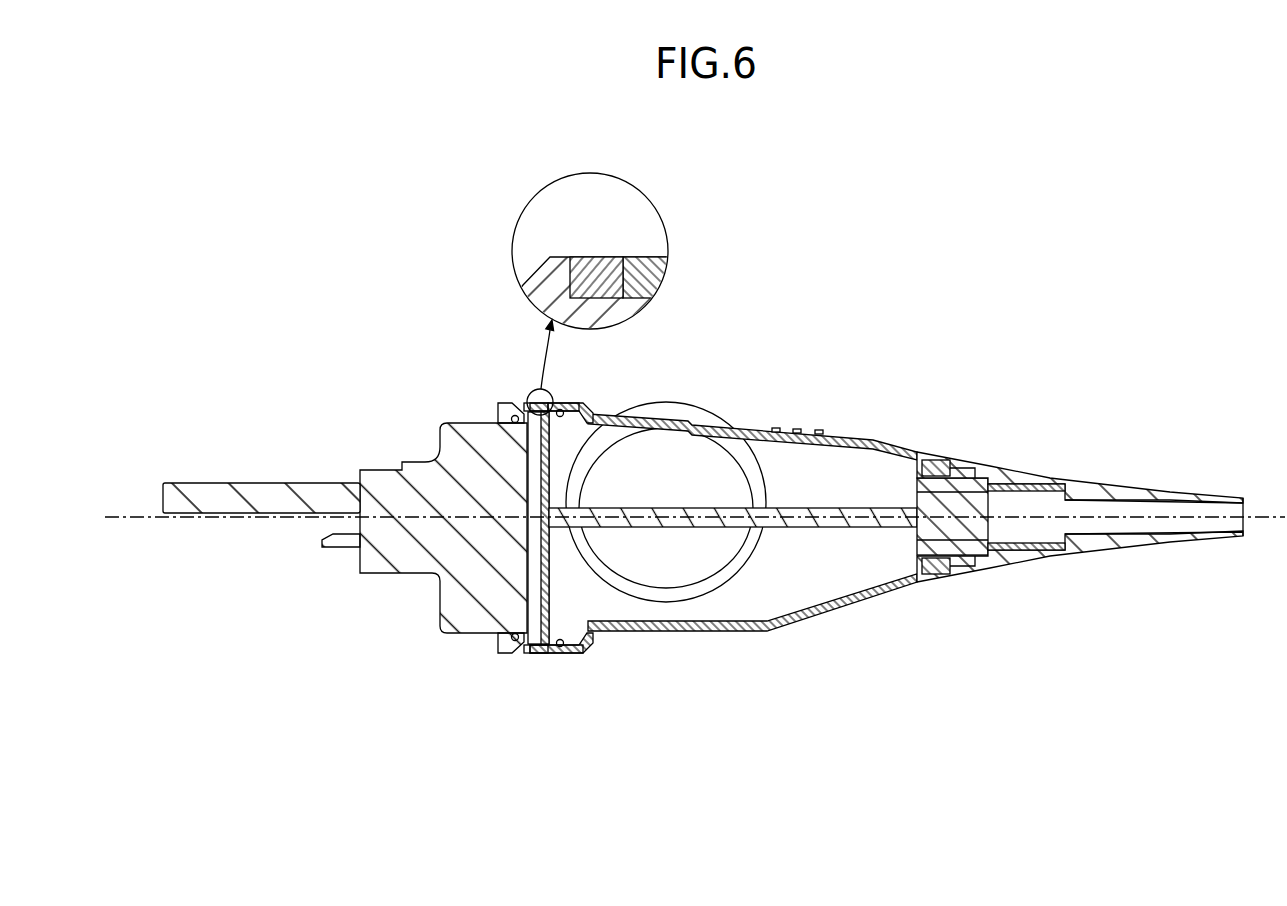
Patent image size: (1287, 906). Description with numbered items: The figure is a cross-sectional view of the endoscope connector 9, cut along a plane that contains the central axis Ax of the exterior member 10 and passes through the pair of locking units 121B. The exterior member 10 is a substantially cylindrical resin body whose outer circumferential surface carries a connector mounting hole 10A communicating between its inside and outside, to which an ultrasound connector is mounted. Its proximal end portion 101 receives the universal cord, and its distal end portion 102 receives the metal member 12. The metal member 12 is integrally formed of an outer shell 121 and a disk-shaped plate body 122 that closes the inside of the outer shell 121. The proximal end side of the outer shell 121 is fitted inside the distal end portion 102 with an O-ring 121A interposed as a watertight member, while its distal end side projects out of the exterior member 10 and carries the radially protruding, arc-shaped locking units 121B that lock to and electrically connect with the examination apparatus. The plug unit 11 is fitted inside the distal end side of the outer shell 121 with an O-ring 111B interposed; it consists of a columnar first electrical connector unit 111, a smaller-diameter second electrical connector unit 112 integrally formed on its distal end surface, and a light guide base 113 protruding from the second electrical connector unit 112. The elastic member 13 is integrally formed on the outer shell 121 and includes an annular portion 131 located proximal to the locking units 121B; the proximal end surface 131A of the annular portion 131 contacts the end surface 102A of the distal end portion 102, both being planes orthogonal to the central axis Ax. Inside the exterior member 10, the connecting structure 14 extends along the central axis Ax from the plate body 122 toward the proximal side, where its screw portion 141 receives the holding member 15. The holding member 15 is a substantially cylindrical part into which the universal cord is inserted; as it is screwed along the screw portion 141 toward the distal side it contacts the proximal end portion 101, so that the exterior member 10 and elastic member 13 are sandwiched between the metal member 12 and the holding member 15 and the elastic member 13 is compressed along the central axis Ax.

The endoscope connector 9 is at (820, 175).
The exterior member 10 is at (741, 505).
The connector mounting hole 10A is at (672, 578).
The plug unit 11 is at (424, 551).
The first electrical connector unit 111 is at (483, 551).
The O-ring 111B is at (495, 652).
The second electrical connector unit 112 is at (377, 485).
The light guide base 113 is at (238, 492).
The metal member 12 is at (505, 566).
The outer shell 121 is at (550, 474).
The O-ring 121A is at (573, 405).
The locking unit 121B is at (511, 404).
The plate body 122 is at (552, 582).
The elastic member 13 is at (624, 211).
The annular portion 131 is at (592, 258).
The end surface 131A is at (655, 258).
The distal end portion 102 is at (553, 657).
The end surface 102A is at (625, 300).
The connecting structure 14 is at (817, 505).
The screw portion 141 is at (920, 535).
The holding member 15 is at (1100, 487).
The proximal end portion 101 is at (919, 446).
The central axis Ax is at (125, 512).